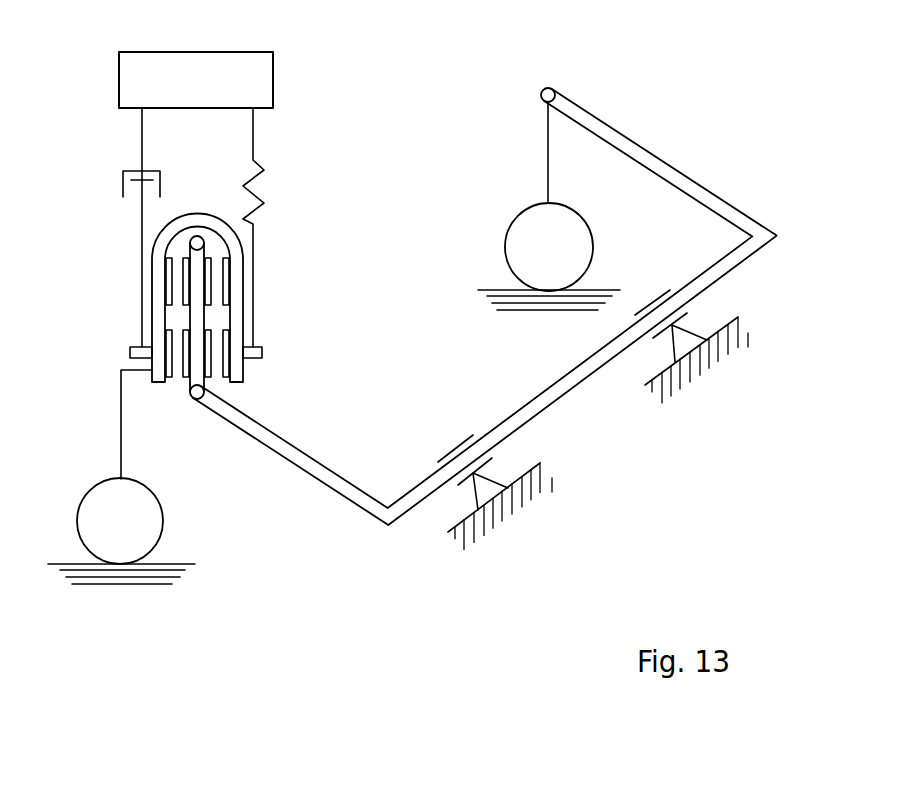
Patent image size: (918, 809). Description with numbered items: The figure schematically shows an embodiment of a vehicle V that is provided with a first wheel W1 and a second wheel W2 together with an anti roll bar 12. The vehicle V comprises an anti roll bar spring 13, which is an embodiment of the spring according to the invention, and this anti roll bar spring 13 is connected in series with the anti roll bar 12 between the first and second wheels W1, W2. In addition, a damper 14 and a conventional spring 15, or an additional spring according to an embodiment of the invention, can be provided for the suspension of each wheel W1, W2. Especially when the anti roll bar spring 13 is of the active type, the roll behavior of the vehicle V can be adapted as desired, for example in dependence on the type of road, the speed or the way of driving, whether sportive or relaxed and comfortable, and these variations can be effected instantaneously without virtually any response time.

The anti roll bar 12 is at (732, 263).
The anti roll bar spring 13 is at (235, 310).
The damper 14 is at (142, 215).
The conventional spring 15 is at (253, 247).
The vehicle V is at (273, 81).
The first wheel W1 is at (164, 522).
The second wheel W2 is at (593, 245).